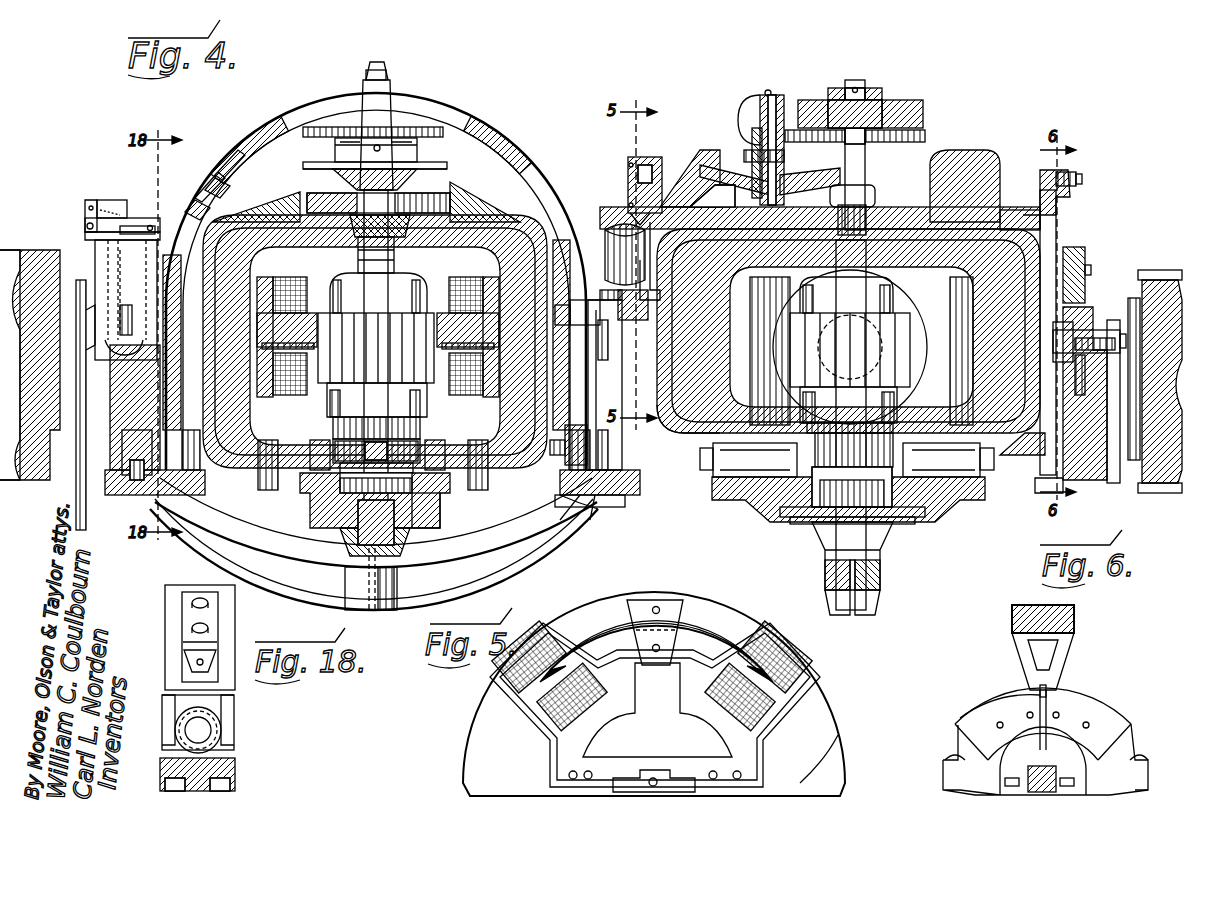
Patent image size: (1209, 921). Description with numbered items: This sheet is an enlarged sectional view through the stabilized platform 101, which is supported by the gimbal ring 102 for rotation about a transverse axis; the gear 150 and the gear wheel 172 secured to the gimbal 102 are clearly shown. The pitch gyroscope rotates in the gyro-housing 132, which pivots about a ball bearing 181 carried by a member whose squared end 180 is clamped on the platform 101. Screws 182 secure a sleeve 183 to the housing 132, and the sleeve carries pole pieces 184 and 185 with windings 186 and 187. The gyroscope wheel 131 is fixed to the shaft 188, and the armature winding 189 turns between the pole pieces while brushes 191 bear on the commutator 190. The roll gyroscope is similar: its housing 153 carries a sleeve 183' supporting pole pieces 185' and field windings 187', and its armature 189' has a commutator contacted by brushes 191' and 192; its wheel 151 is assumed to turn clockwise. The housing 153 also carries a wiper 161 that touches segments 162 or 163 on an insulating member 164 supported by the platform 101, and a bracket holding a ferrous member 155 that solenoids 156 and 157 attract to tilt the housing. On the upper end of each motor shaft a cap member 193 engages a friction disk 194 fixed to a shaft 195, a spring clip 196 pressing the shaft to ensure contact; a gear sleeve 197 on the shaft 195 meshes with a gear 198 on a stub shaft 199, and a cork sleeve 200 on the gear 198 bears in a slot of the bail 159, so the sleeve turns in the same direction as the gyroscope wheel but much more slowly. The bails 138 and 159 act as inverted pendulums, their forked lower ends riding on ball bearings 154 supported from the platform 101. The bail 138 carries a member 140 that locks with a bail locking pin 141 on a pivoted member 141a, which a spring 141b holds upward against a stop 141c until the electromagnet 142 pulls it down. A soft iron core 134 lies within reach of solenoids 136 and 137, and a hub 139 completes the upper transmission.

In FIG. 4, the stabilized platform 101 is at (299, 430).
In FIG. 5, the stabilized platform 101 is at (671, 694).
In FIG. 4, the gimbal ring 102 is at (35, 353).
In FIG. 4, the gyroscope wheel 131 is at (525, 452).
In FIG. 4, the gyro-housing 132 is at (230, 455).
In FIG. 4, the core of soft iron 134 is at (480, 135).
In FIG. 4, the solenoid 136 is at (263, 182).
In FIG. 4, the solenoid 137 is at (522, 160).
In FIG. 4, the bail 138 is at (505, 148).
In FIG. 18, the bail 138 is at (170, 598).
In FIG. 4, the hub 139 is at (430, 112).
In FIG. 4, the member 140 is at (213, 175).
In FIG. 18, the member 140 is at (185, 616).
In FIG. 4, the bail locking pin 141 is at (160, 220).
In FIG. 18, the bail locking pin 141 is at (190, 665).
In FIG. 4, the bail locking support member 141a is at (88, 228).
In FIG. 4, the spring 141b is at (125, 210).
In FIG. 4, the stop 141c is at (112, 200).
In FIG. 4, the bail locking electromagnet 142 is at (105, 255).
In FIG. 4, the gear 150 is at (80, 530).
In FIG. 4, the gyroscope wheel 151 is at (1045, 445).
In FIG. 4, the roll gyroscope housing 153 is at (820, 189).
In FIG. 5, the roll gyroscope housing 153 is at (668, 607).
In FIG. 4, the ball bearings 154 is at (172, 498).
In FIG. 18, the ball bearings 154 is at (212, 732).
In FIG. 4, the ferrous member 155 is at (630, 190).
In FIG. 5, the ferrous member 155 is at (700, 635).
In FIG. 5, the solenoid 156 is at (800, 660).
In FIG. 4, the solenoid 157 is at (608, 228).
In FIG. 5, the solenoid 157 is at (548, 622).
In FIG. 4, the bail 159 is at (880, 100).
In FIG. 4, the wiper 161 is at (1058, 195).
In FIG. 6, the wiper 161 is at (1070, 660).
In FIG. 6, the segment 162 is at (995, 700).
In FIG. 4, the segment 163 is at (1075, 225).
In FIG. 6, the segment 163 is at (1070, 700).
In FIG. 4, the insulating member 164 is at (1074, 247).
In FIG. 6, the insulating member 164 is at (1100, 740).
In FIG. 4, the gear wheel 172 is at (1133, 298).
In FIG. 4, the squared end 180 is at (1085, 330).
In FIG. 6, the squared end 180 is at (1035, 768).
In FIG. 4, the ball bearing 181 is at (1075, 330).
In FIG. 4, the screws 182 is at (373, 498).
In FIG. 4, the sleeve 183 is at (272, 298).
In FIG. 4, the sleeve 183' is at (771, 351).
In FIG. 4, the pole piece 184 is at (305, 318).
In FIG. 4, the pole piece 185 is at (461, 337).
In FIG. 4, the pole piece 185' is at (886, 351).
In FIG. 4, the winding 186 is at (320, 405).
In FIG. 4, the winding 187 is at (379, 422).
In FIG. 4, the field winding 187' is at (855, 347).
In FIG. 4, the shaft 188 is at (385, 318).
In FIG. 4, the armature winding 189 is at (385, 365).
In FIG. 4, the armature 189' is at (876, 425).
In FIG. 4, the commutator 190 is at (396, 451).
In FIG. 4, the brushes 191 is at (367, 451).
In FIG. 4, the brushes 191' is at (847, 476).
In FIG. 4, the brushes 192 is at (920, 496).
In FIG. 4, the cap member 193 is at (855, 175).
In FIG. 4, the friction disk 194 is at (409, 149).
In FIG. 4, the shaft 195 is at (780, 95).
In FIG. 4, the spring clip 196 is at (409, 118).
In FIG. 4, the gear sleeve 197 is at (750, 130).
In FIG. 4, the gear 198 is at (381, 110).
In FIG. 4, the stub shaft 199 is at (858, 80).
In FIG. 4, the cork sleeve 200 is at (412, 77).